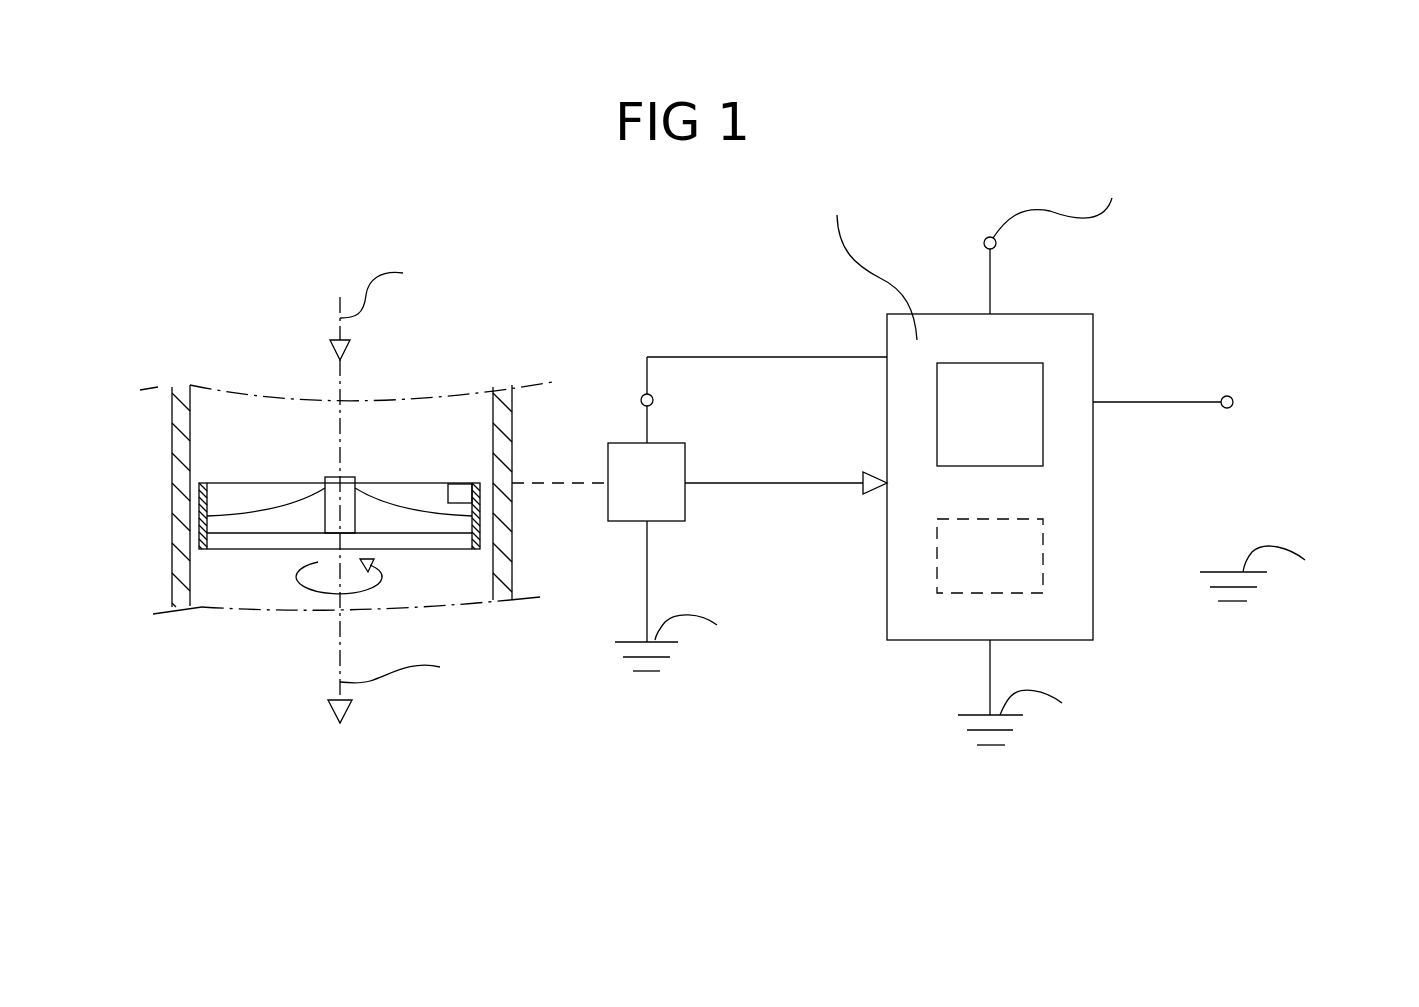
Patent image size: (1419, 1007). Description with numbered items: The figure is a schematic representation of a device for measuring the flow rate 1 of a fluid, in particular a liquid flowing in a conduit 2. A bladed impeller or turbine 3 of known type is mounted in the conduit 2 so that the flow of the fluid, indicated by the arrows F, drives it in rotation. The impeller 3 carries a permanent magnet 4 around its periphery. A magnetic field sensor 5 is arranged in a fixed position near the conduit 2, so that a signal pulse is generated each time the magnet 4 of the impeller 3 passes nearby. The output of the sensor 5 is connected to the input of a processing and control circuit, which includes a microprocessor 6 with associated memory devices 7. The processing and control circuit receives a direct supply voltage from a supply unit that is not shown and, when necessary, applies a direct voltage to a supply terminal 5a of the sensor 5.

The device for measuring the flow rate 1 is at (1196, 306).
The conduit 2 is at (190, 571).
The bladed impeller or turbine 3 is at (283, 445).
The permanent magnet 4 is at (460, 487).
The magnetic field sensor 5 is at (620, 498).
The supply terminal 5a is at (653, 400).
The microprocessor 6 is at (980, 367).
The memory devices 7 is at (967, 518).